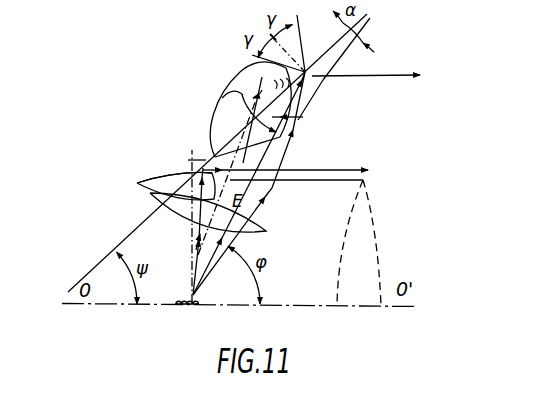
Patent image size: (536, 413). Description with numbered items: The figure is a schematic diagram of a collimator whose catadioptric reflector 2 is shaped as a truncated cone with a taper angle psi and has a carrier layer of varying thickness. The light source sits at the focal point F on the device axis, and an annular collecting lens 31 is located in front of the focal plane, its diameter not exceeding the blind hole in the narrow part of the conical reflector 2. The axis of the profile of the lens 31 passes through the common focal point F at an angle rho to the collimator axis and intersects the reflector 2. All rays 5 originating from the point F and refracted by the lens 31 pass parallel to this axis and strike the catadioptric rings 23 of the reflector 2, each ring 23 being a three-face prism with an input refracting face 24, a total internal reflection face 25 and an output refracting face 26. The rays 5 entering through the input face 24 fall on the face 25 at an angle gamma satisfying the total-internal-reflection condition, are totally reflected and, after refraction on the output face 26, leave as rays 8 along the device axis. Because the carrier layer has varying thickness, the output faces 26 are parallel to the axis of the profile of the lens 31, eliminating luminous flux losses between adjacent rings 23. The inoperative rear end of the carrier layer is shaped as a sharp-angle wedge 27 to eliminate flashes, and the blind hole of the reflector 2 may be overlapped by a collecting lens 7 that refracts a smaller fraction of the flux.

The catadioptric reflector 2 is at (243, 136).
The focal rays 5 is at (262, 214).
The collecting lens 7 is at (372, 237).
The output rays 8 is at (315, 114).
The catadioptric ring 23 is at (253, 77).
The input refracting face 24 is at (190, 178).
The total internal reflection face 25 is at (186, 156).
The output refracting face 26 is at (215, 157).
The sharp-angle wedge 27 is at (168, 184).
The annular collecting lens 31 is at (201, 229).
The focal point F is at (187, 242).